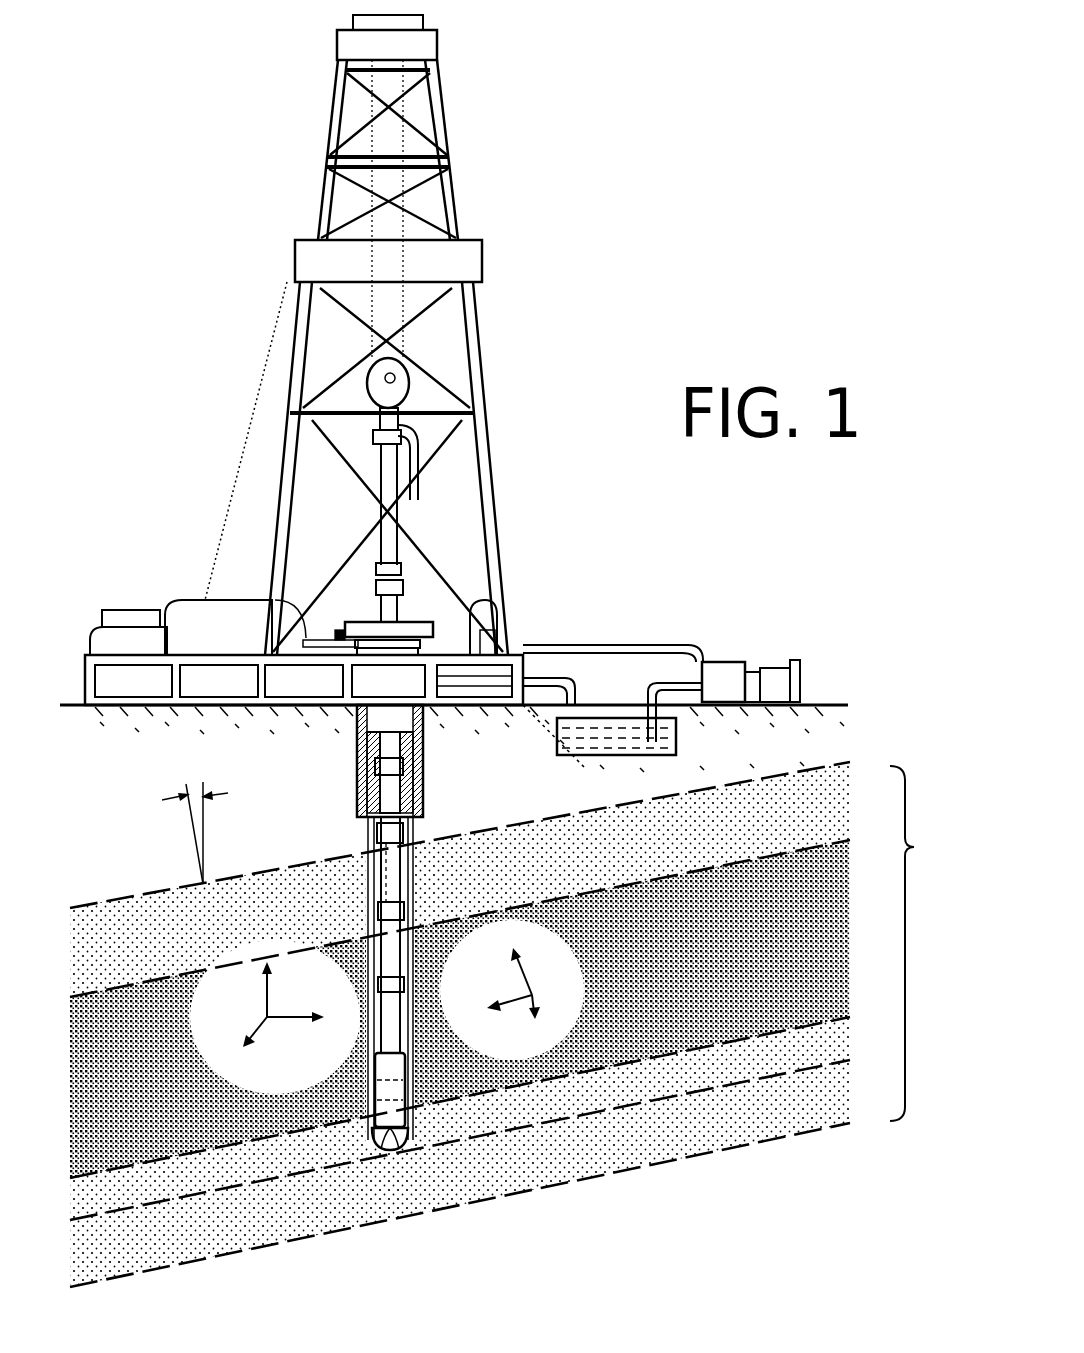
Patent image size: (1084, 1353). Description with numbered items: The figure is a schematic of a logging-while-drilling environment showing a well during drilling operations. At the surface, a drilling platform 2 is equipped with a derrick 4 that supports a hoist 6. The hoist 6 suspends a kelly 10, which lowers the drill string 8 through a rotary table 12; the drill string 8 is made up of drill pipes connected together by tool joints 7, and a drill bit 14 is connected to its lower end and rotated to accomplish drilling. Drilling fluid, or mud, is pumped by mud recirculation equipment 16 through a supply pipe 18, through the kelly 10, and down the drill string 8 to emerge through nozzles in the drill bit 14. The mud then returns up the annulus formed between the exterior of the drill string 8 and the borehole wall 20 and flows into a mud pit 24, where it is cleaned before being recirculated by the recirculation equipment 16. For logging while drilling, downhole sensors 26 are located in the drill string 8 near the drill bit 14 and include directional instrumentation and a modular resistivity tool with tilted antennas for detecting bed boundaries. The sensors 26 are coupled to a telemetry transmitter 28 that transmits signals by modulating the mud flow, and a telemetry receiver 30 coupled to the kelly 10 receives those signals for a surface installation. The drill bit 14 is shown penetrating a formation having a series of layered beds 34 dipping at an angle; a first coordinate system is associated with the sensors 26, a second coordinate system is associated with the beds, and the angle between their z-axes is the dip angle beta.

The drilling platform 2 is at (86, 667).
The derrick 4 is at (457, 193).
The hoist 6 is at (422, 372).
The tool joints 7 is at (378, 847).
The drill string 8 is at (368, 852).
The kelly 10 is at (399, 472).
The rotary table 12 is at (420, 625).
The drill bit 14 is at (408, 1145).
The mud recirculation equipment 16 is at (718, 669).
The supply pipe 18 is at (640, 645).
The borehole wall 20 is at (413, 840).
The mud pit 24 is at (672, 748).
The downhole sensors 26 is at (374, 1105).
The telemetry transmitter 28 is at (406, 1078).
The telemetry receiver 30 is at (402, 567).
The layered beds 34 is at (514, 1024).